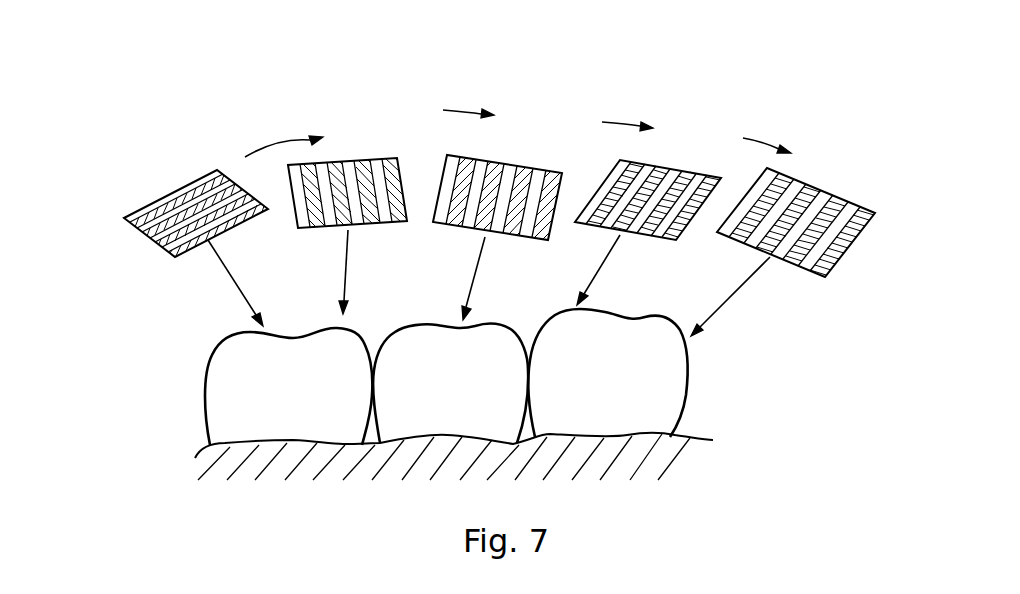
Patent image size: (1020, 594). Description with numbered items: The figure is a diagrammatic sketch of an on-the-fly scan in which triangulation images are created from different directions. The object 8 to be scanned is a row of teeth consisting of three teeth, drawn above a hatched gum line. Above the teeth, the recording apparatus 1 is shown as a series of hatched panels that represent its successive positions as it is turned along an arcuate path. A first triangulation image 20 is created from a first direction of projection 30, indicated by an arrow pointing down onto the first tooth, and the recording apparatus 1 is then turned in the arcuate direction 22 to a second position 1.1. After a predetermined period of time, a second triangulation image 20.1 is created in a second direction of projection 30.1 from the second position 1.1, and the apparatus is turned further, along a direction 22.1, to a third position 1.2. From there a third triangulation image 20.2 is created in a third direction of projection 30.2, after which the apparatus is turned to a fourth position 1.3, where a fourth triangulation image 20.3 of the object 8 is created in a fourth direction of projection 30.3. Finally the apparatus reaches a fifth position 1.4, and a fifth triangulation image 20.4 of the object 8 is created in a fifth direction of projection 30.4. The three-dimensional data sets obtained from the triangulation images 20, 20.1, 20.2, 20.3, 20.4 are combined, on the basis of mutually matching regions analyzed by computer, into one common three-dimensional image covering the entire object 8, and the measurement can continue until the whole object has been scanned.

The recording apparatus 1 is at (117, 187).
The second position 1.1 is at (342, 112).
The third position 1.2 is at (518, 125).
The fourth position 1.3 is at (668, 137).
The fifth position 1.4 is at (817, 172).
The object 8 is at (662, 377).
The first triangulation image 20 is at (197, 177).
The second triangulation image 20.1 is at (370, 163).
The third triangulation image 20.2 is at (542, 173).
The fourth triangulation image 20.3 is at (697, 173).
The fifth triangulation image 20.4 is at (855, 200).
The direction 22 is at (275, 138).
The rotation direction of bristle field 22.1 is at (467, 108).
The first direction of projection 30 is at (235, 277).
The second direction of projection 30.1 is at (347, 257).
The third direction of projection 30.2 is at (485, 248).
The fourth direction of projection 30.3 is at (612, 255).
The fifth direction of projection 30.4 is at (747, 287).